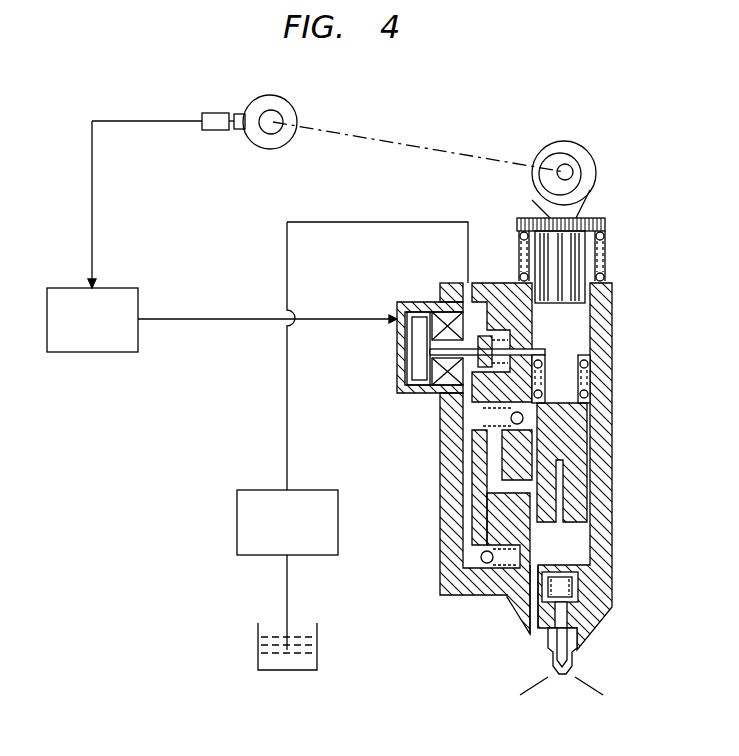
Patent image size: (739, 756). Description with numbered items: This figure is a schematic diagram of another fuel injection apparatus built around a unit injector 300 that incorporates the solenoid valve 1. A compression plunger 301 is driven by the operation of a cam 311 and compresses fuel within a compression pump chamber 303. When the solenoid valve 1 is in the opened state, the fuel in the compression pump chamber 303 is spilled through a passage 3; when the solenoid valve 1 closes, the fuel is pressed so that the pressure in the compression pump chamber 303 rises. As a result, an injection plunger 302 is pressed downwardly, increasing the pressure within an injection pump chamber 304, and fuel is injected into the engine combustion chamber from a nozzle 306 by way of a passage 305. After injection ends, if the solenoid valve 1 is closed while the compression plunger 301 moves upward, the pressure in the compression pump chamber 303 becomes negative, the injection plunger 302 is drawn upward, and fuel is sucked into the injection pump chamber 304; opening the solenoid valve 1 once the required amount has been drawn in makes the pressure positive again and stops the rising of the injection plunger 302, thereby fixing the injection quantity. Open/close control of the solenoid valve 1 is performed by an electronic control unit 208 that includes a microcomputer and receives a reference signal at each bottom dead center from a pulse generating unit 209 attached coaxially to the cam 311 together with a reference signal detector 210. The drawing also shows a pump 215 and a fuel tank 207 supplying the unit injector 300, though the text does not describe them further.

The solenoid valve 1 is at (390, 380).
The passage 3 is at (530, 337).
The fuel tank 207 is at (300, 673).
The electronic control unit 208 is at (130, 287).
The pulse generating unit 209 is at (290, 104).
The reference signal detector 210 is at (215, 132).
The pump 215 is at (338, 495).
The unit injector 300 is at (693, 376).
The compression plunger 301 is at (572, 240).
The injection plunger 302 is at (569, 432).
The compression pump chamber 303 is at (581, 323).
The injection pump chamber 304 is at (578, 546).
The passage 305 is at (528, 605).
The nozzle 306 is at (578, 652).
The cam 311 is at (572, 152).